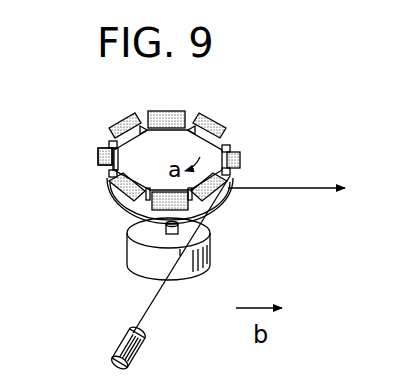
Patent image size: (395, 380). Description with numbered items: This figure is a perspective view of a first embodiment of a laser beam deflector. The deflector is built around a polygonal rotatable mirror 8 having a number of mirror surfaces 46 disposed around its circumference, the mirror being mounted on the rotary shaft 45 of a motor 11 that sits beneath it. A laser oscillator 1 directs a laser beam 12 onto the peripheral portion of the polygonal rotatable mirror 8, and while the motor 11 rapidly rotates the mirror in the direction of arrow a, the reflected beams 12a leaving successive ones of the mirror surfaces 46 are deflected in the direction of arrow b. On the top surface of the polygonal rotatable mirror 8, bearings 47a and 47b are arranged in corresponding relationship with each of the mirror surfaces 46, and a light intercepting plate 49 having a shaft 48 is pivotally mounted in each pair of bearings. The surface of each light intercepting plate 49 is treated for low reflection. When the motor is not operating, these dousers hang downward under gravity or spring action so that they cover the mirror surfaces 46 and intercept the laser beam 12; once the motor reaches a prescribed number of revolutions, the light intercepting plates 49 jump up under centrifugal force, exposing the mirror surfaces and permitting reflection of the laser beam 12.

The laser oscillator 1 is at (118, 348).
The polygonal rotatable mirror 8 is at (142, 205).
The motor 11 is at (155, 265).
The laser beam 12 is at (150, 307).
The reflected beams 12a is at (272, 187).
The rotary shaft 45 is at (162, 230).
The mirror surfaces 46 is at (225, 196).
The bearing 47a is at (112, 178).
The bearing 47b is at (108, 143).
The shaft 48 is at (108, 170).
The light intercepting plate 49 is at (98, 160).